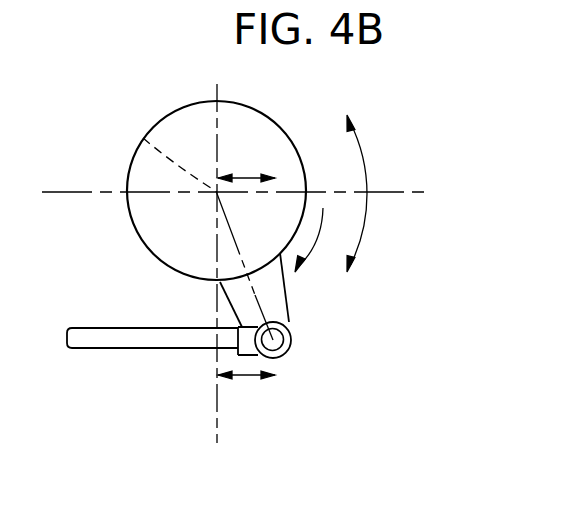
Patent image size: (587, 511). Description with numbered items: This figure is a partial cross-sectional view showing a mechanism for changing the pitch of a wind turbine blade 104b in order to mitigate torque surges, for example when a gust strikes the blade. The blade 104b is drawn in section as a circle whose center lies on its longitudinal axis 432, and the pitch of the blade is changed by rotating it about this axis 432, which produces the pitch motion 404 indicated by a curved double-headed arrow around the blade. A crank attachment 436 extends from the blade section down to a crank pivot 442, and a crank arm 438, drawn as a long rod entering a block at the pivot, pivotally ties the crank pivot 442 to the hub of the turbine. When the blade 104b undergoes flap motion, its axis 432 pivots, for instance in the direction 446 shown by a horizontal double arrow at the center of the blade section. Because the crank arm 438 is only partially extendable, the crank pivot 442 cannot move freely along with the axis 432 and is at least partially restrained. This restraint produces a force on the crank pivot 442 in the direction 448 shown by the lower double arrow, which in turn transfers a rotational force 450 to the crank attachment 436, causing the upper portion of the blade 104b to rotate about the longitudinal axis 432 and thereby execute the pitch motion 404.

The blade 104b is at (186, 102).
The longitudinal axis 432 is at (143, 138).
The direction 446 is at (248, 176).
The pitch motion 404 is at (367, 212).
The rotational force 450 is at (319, 240).
The crank attachment 436 is at (304, 310).
The crank arm 438 is at (105, 328).
The crank pivot 442 is at (273, 341).
The direction 448 is at (247, 378).